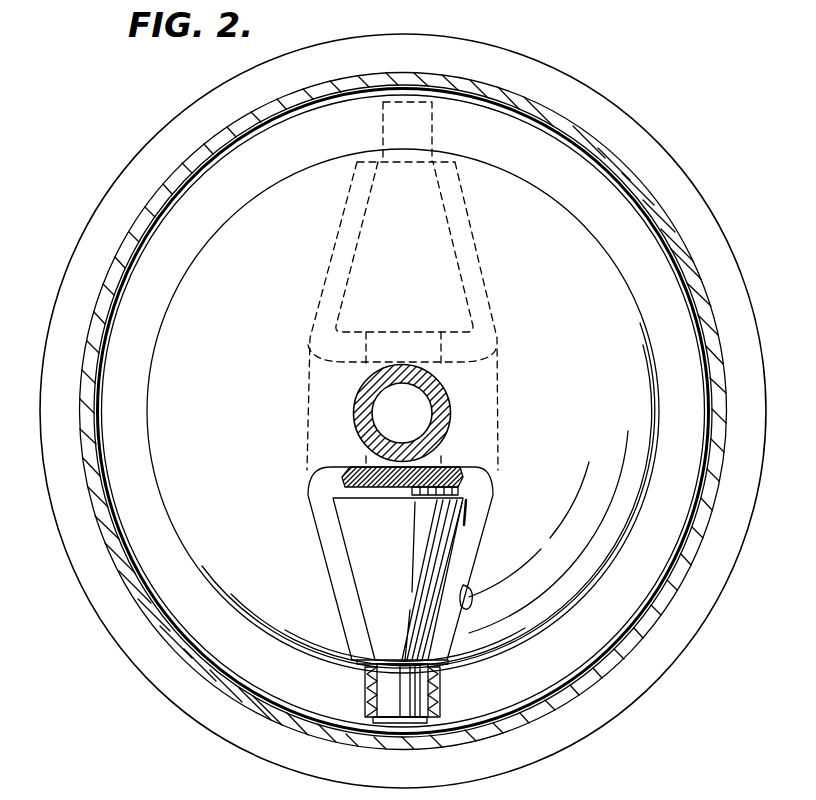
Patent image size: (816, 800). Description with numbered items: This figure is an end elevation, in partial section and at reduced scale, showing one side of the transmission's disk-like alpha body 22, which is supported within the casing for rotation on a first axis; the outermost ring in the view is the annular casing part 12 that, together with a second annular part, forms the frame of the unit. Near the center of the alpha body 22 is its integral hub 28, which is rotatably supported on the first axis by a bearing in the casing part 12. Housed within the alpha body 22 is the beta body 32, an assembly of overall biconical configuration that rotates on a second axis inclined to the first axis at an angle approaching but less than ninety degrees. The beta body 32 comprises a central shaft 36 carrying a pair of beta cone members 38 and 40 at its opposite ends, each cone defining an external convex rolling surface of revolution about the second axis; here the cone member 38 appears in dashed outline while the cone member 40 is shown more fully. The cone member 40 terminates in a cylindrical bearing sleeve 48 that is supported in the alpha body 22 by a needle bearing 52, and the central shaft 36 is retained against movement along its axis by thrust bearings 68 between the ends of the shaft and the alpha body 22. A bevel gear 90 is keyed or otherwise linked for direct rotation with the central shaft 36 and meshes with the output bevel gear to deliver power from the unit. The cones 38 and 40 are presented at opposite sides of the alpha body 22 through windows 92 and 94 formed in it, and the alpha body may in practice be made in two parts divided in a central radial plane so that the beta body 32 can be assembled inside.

The annular casing part 12 is at (657, 613).
The alpha body 22 is at (570, 422).
The hub 28 is at (448, 424).
The beta body 32 is at (478, 489).
The central shaft 36 is at (452, 371).
The beta cone member 38 is at (472, 293).
The beta cone member 40 is at (411, 571).
The cylindrical bearing sleeve 48 is at (401, 699).
The needle bearing 52 is at (438, 698).
The thrust bearing 68 is at (414, 723).
The bevel gear 90 is at (404, 496).
The window 92 is at (478, 598).
The window 94 is at (472, 230).